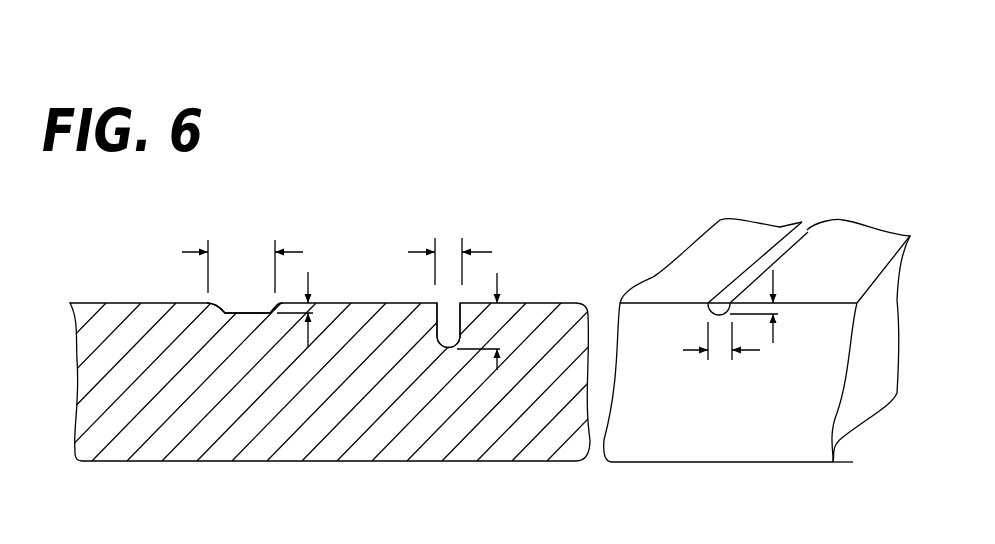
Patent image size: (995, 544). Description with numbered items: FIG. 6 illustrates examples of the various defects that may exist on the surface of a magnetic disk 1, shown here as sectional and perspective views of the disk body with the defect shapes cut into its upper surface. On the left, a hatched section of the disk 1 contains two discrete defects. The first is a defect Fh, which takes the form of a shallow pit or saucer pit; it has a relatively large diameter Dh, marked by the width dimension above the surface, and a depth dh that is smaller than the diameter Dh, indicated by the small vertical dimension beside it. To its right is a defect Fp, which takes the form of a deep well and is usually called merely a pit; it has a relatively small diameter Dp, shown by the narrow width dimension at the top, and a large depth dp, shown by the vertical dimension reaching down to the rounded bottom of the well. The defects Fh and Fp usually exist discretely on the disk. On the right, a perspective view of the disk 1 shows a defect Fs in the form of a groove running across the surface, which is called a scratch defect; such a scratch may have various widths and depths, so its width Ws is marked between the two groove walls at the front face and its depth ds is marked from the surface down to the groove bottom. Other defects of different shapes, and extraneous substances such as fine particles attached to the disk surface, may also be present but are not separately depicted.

The disk 1 is at (100, 352).
The shallow pit defect Fh is at (218, 305).
The diameter of shallow pit Dh is at (242, 265).
The depth of shallow pit dh is at (313, 312).
The deep well defect Fp is at (445, 318).
The diameter of deep well Dp is at (449, 252).
The depth of deep well dp is at (484, 321).
The scratch defect Fs is at (763, 263).
The depth of scratch defect ds is at (778, 310).
The width of scratch defect Ws is at (721, 360).